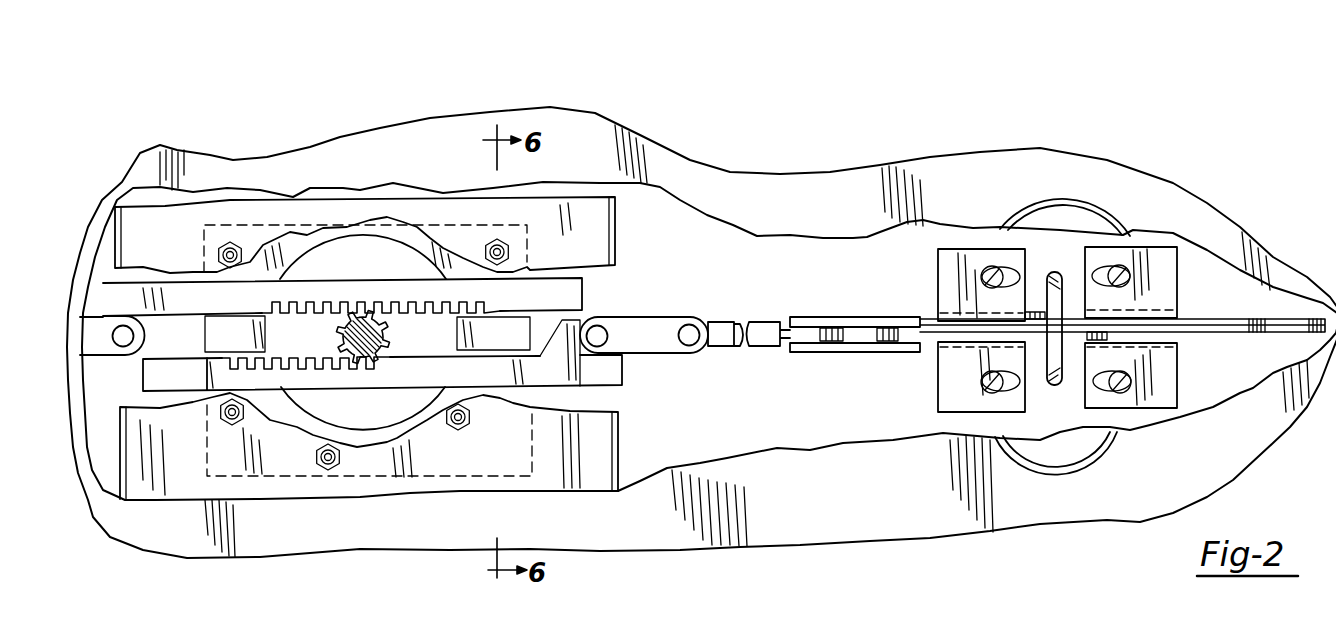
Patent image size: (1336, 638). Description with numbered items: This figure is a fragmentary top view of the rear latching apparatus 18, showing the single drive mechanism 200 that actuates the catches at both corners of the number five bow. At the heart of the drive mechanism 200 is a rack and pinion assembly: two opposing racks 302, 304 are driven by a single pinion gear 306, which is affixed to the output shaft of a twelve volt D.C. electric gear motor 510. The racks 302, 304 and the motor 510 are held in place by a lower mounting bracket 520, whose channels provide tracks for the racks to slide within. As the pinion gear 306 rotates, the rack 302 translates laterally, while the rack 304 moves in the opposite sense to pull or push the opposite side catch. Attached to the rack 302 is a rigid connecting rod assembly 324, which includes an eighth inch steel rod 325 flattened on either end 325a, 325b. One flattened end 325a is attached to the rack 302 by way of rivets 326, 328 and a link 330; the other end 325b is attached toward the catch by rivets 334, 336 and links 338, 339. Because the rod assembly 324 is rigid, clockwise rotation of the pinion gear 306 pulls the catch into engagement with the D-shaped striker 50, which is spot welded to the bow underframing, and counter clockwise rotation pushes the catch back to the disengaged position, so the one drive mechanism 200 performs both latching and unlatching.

The rear latching apparatus 18 is at (596, 106).
The drive mechanism 200 is at (798, 160).
The rack 304 is at (168, 316).
The pinion gear 306 is at (363, 310).
The lower mounting bracket 520 is at (427, 230).
The electric gear motor 510 is at (368, 425).
The rack 302 is at (580, 386).
The link 330 is at (648, 354).
The rivet 326 is at (598, 326).
The rivet 328 is at (708, 317).
The rod assembly 324 is at (733, 377).
The flattened end of rod 325a is at (722, 320).
The steel rod 325 is at (752, 322).
The flattened end of rod 325b is at (837, 317).
The rivet 334 is at (836, 352).
The link 338 is at (852, 317).
The link 339 is at (858, 352).
The rivet 336 is at (908, 352).
The striker 50 is at (1055, 386).